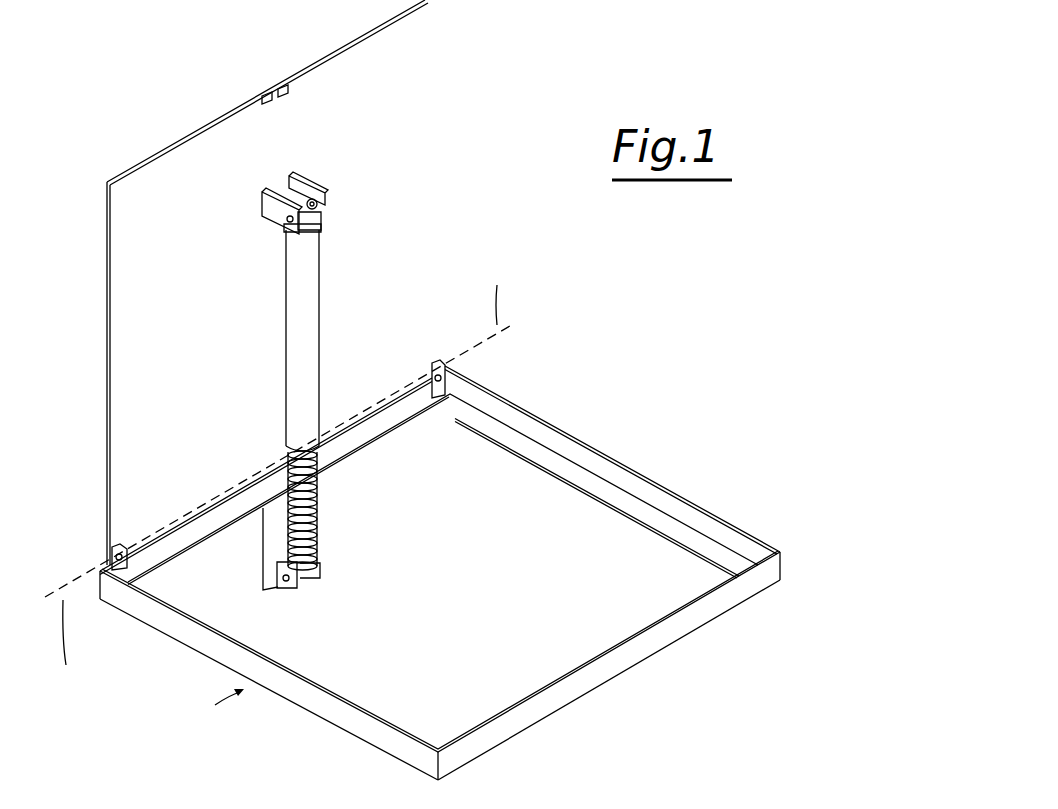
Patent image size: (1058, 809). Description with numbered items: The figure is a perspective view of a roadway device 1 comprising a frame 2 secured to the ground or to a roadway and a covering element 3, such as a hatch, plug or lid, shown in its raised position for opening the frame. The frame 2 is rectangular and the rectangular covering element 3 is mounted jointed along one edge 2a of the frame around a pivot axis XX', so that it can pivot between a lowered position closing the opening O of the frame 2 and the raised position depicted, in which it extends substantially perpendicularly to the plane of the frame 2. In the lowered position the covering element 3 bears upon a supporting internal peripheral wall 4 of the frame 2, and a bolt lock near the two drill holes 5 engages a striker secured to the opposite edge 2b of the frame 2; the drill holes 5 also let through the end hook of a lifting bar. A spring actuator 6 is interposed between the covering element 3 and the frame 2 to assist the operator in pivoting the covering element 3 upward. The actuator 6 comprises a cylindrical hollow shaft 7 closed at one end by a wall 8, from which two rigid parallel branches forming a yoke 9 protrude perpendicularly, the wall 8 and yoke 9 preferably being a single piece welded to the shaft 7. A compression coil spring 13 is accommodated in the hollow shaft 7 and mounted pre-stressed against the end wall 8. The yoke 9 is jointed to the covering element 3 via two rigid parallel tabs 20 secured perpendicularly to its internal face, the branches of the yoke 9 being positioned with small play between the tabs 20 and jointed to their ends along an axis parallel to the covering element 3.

The roadway device 1 is at (80, 452).
The frame 2 is at (615, 455).
The edge of the frame 2a is at (100, 566).
The edge of the frame 2b is at (595, 680).
The covering element 3 is at (186, 131).
The supporting internal peripheral wall 4 is at (580, 482).
The drill holes 5 is at (282, 81).
The spring actuator 6 is at (282, 331).
The cylindrical hollow shaft 7 is at (322, 312).
The wall 8 is at (321, 222).
The yoke 9 is at (300, 195).
The spring 13 is at (321, 511).
The tabs 20 is at (305, 186).